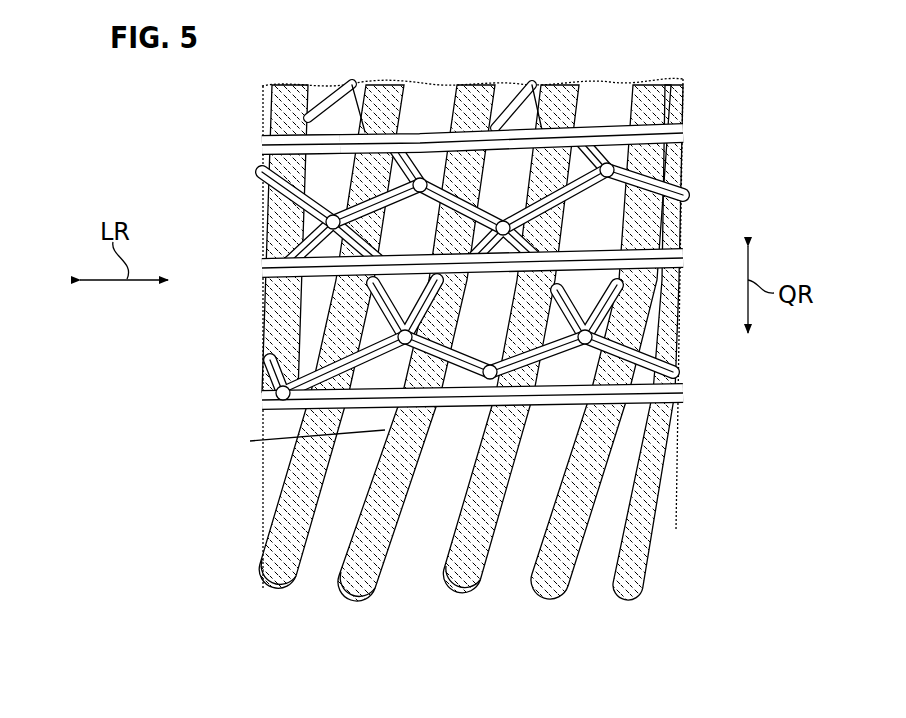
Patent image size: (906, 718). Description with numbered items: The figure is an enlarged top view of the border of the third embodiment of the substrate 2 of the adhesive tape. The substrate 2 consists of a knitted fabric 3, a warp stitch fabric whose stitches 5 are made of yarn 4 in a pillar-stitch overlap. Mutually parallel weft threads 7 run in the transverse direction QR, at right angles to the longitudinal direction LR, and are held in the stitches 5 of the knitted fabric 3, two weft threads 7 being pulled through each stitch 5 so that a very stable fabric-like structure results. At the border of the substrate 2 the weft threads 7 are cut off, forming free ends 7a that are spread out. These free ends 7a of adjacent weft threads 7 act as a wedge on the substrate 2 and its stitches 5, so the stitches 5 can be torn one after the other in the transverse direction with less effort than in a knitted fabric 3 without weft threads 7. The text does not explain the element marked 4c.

The substrate 2 is at (238, 296).
The knitted fabric 3 is at (588, 122).
The yarn 4 is at (264, 361).
The weft yarn end portion 4c is at (261, 142).
The stitches 5 is at (258, 388).
The weft threads 7 is at (302, 514).
The free ends 7a is at (277, 592).